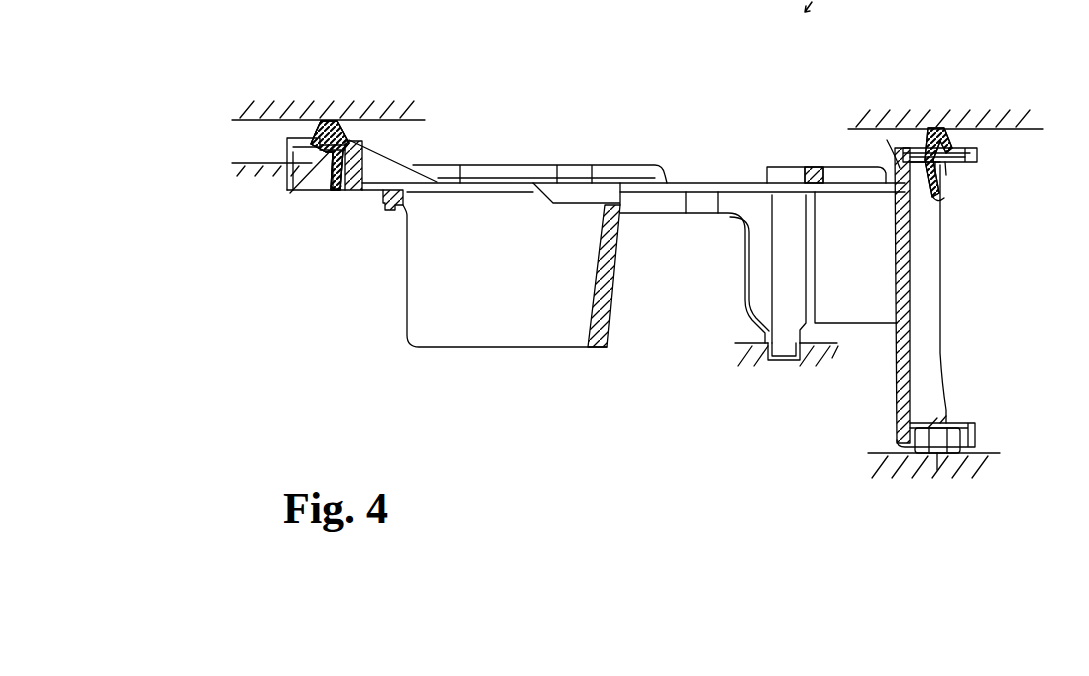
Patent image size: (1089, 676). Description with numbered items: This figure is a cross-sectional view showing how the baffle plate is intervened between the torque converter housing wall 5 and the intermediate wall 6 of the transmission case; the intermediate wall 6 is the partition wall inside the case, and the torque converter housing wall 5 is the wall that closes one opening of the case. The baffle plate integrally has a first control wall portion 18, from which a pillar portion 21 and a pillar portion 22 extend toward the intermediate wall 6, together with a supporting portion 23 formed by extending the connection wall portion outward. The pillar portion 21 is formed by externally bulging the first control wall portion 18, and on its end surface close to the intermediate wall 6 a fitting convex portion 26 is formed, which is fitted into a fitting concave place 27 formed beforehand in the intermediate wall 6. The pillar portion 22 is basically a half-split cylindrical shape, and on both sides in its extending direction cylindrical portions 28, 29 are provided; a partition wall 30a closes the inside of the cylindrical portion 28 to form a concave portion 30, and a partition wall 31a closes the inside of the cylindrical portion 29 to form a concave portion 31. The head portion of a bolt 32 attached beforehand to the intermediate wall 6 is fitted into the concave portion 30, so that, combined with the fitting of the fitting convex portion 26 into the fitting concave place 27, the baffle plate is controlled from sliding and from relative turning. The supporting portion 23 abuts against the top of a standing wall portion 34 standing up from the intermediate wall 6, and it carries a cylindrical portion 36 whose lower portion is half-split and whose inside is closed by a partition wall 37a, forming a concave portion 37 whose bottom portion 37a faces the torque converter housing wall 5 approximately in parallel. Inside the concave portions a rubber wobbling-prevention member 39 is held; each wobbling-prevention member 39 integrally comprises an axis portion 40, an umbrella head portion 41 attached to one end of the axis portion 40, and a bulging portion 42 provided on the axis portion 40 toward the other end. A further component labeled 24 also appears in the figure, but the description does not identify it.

The torque converter housing wall 5 is at (417, 115).
The intermediate wall 6 is at (838, 347).
The first control wall portion 18 is at (847, 220).
The pillar portion 21 is at (788, 227).
The pillar portion 22 is at (948, 297).
The supporting portion 23 is at (358, 193).
The container (cup holder) 24 is at (663, 293).
The fitting convex portion 26 is at (790, 365).
The fitting concave place 27 is at (778, 362).
The cylindrical portion 28 is at (972, 445).
The cylindrical portion 29 is at (977, 158).
The concave portion 30 is at (970, 433).
The partition wall 30a is at (945, 427).
The concave portion 31 is at (975, 150).
The partition wall 31a is at (950, 165).
The bolt head portion 32 is at (935, 455).
The standing wall portion 34 is at (240, 163).
The cylindrical portion 36 is at (302, 153).
The concave portion 37 is at (358, 135).
The partition wall 37a is at (310, 145).
The wobbling-prevention member 39 is at (330, 125).
The umbrella head portion 41 is at (631, 159).
The axis portion 40 is at (308, 186).
The bulging portion 42 is at (290, 193).